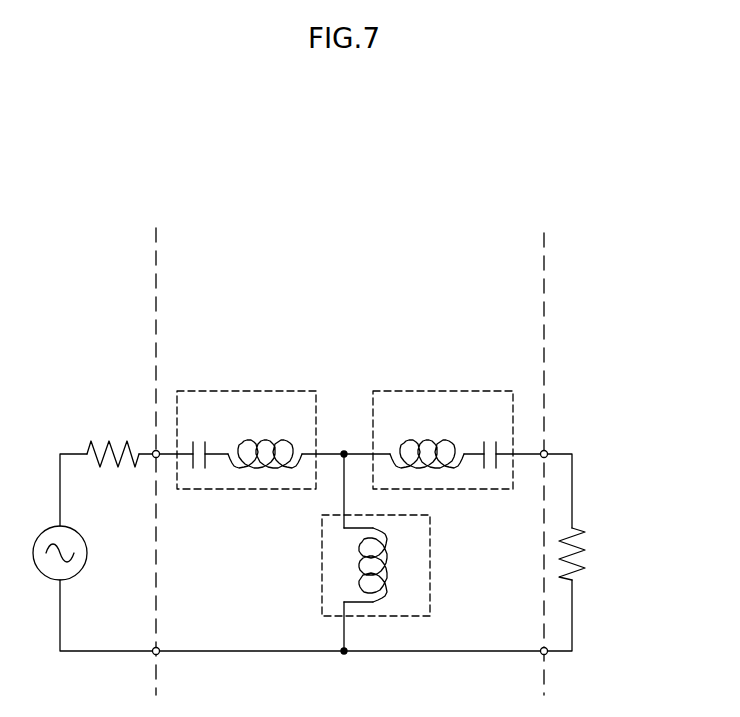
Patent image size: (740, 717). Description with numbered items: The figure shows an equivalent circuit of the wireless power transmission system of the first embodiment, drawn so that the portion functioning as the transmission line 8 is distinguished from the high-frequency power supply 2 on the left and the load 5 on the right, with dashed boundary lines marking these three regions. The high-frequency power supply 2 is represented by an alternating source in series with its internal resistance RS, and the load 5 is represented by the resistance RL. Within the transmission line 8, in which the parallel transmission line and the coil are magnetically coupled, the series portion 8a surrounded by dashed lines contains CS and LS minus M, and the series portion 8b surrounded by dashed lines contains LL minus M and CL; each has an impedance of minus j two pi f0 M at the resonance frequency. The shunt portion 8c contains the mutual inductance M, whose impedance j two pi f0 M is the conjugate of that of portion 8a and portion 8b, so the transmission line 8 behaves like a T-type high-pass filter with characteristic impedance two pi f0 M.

The high-frequency power supply 2 is at (120, 340).
The load 5 is at (580, 337).
The transmission line 8 is at (360, 337).
The portion surrounded by dashed lines 8a is at (267, 389).
The portion surrounded by dashed lines 8b is at (475, 389).
The portion 8c is at (430, 561).